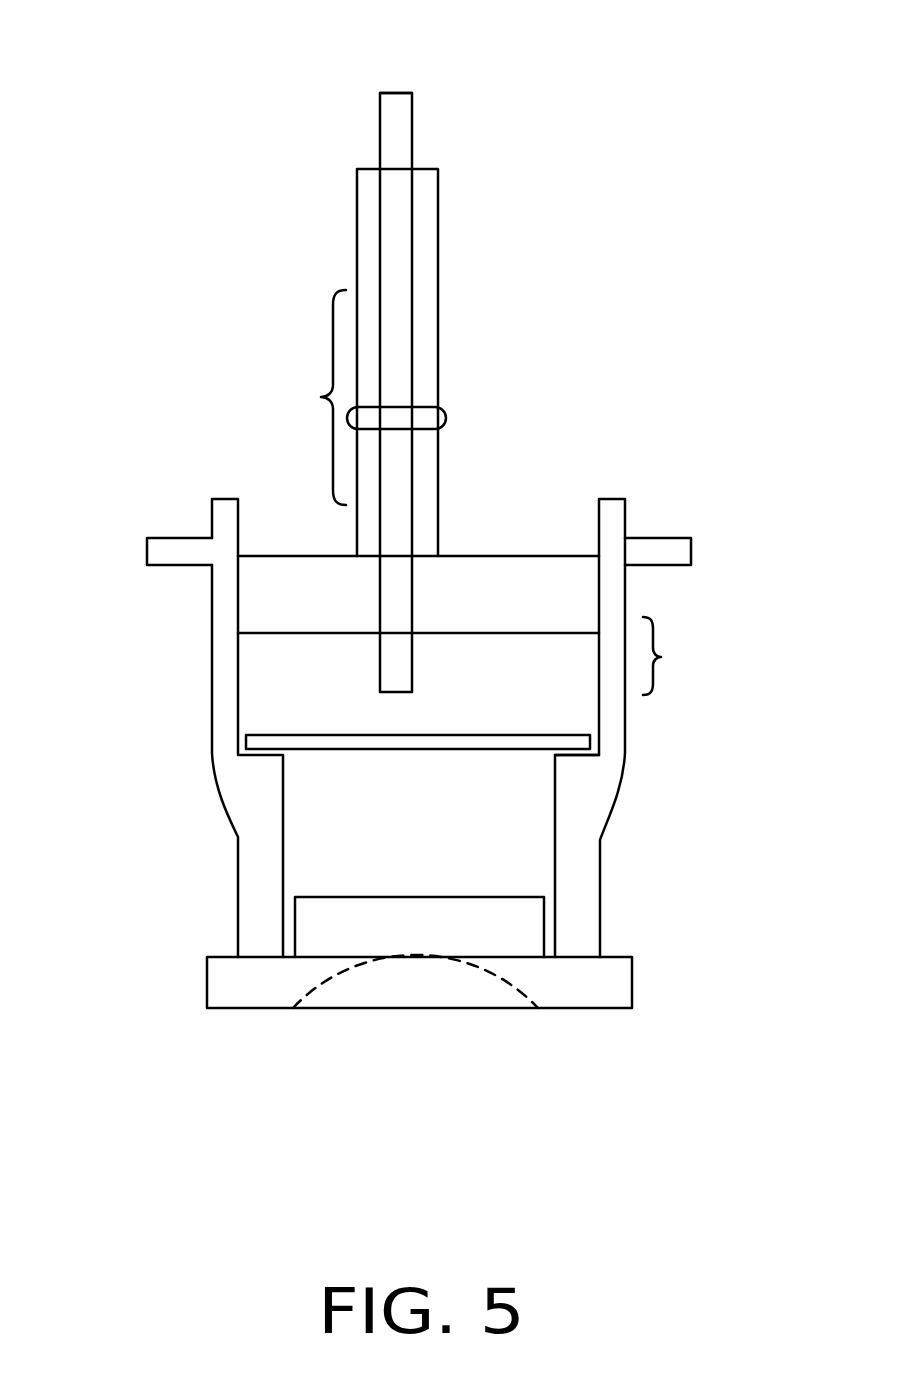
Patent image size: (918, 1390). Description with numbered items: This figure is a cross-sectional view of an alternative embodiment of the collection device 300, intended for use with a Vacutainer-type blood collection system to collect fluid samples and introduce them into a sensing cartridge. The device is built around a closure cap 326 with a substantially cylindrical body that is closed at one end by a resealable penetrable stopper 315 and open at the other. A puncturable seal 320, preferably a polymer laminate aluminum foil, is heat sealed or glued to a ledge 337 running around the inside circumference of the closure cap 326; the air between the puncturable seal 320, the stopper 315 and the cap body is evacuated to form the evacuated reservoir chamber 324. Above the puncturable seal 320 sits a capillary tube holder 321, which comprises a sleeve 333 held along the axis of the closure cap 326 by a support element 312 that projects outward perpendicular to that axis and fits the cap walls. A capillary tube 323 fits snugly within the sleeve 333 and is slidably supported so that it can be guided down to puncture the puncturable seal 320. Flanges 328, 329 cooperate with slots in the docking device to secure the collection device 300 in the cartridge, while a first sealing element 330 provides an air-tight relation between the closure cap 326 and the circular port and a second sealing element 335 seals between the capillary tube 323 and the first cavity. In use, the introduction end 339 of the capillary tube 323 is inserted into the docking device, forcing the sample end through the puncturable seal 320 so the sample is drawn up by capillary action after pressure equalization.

The collection device 300 is at (87, 215).
The support element 312 is at (285, 590).
The resealable penetrable stopper 315 is at (398, 980).
The puncturable seal 320 is at (333, 733).
The capillary tube holder 321 is at (299, 397).
The capillary tube 323 is at (413, 285).
The evacuated reservoir chamber 324 is at (353, 795).
The closure cap 326 is at (679, 656).
The flange 328 is at (175, 543).
The flange 329 is at (655, 543).
The first sealing element 330 is at (226, 505).
The sleeve 333 is at (438, 522).
The second sealing element 335 is at (433, 417).
The ledge 337 is at (572, 755).
The introduction end 339 is at (391, 90).